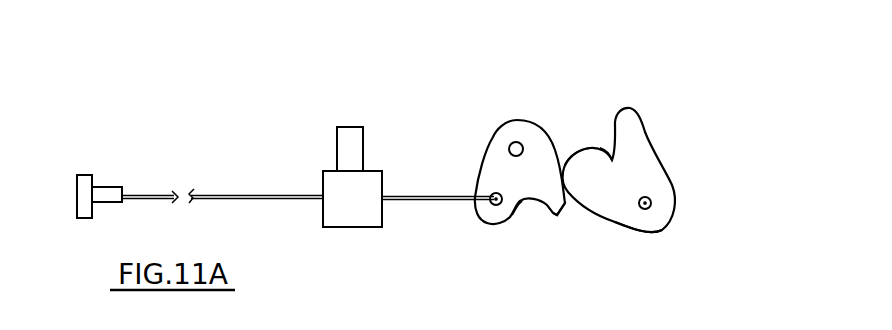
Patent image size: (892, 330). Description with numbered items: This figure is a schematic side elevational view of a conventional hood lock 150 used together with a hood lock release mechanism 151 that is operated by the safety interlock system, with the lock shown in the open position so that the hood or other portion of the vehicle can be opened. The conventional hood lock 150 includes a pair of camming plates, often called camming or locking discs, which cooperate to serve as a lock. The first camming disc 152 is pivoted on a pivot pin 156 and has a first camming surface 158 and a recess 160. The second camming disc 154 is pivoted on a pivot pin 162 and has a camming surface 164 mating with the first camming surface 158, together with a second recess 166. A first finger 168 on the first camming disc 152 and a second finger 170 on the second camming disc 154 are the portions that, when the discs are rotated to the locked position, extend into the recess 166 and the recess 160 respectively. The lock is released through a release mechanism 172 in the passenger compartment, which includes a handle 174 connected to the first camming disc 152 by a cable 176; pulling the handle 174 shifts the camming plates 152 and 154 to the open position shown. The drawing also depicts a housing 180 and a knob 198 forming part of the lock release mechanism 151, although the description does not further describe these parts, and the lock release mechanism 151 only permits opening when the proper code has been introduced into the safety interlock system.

The conventional hood lock 150 is at (594, 74).
The lock release mechanism 151 is at (342, 120).
The first camming disc 152 is at (493, 160).
The second camming disc 154 is at (653, 157).
The pivot pin 156 is at (518, 142).
The first camming surface 158 is at (475, 213).
The recess 160 is at (520, 203).
The pivot pin 162 is at (651, 203).
The camming surface 164 is at (637, 232).
The second recess 166 is at (612, 150).
The first finger 168 is at (557, 217).
The second finger 170 is at (582, 155).
The release mechanism 172 is at (108, 162).
The handle 174 is at (90, 181).
The cable 176 is at (238, 195).
The housing 180 is at (343, 218).
The knob 198 is at (356, 150).